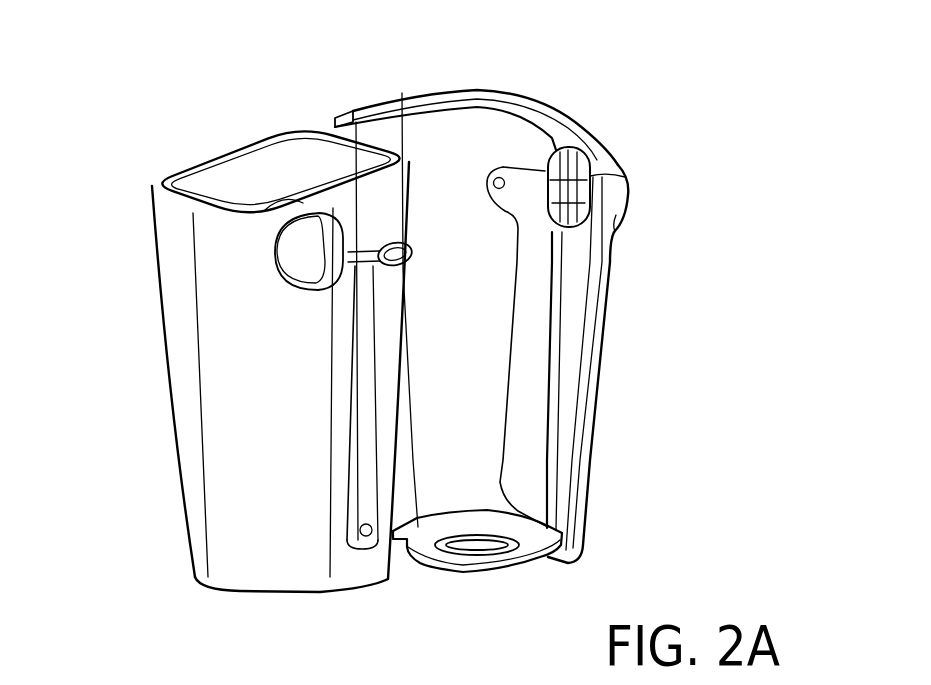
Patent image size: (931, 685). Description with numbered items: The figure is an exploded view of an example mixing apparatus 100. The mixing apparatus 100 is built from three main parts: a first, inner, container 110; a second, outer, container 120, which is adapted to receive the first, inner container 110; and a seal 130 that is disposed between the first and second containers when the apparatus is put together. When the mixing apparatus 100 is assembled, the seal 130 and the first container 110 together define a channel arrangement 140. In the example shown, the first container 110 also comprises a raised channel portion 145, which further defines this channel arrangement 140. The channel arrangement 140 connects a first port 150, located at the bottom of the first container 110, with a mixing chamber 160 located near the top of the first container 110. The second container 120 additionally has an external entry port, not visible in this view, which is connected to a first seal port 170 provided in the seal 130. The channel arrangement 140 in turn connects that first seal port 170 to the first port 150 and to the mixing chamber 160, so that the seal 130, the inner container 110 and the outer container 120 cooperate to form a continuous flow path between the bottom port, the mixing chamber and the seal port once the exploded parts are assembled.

The mixing apparatus 100 is at (122, 68).
The first, inner, container 110 is at (203, 183).
The second, outer, container 120 is at (452, 148).
The seal 130 is at (533, 327).
The channel arrangement 140 is at (368, 420).
The raised channel portion 145 is at (348, 470).
The first port 150 is at (364, 537).
The mixing chamber 160 is at (290, 248).
The first seal port 170 is at (502, 166).